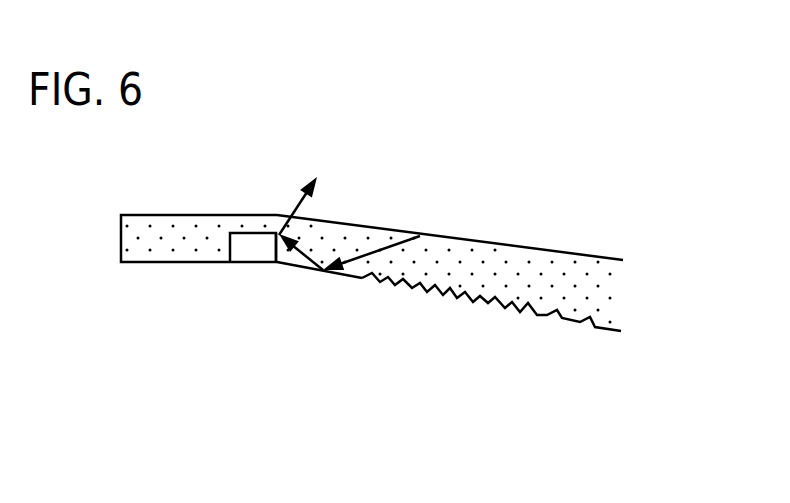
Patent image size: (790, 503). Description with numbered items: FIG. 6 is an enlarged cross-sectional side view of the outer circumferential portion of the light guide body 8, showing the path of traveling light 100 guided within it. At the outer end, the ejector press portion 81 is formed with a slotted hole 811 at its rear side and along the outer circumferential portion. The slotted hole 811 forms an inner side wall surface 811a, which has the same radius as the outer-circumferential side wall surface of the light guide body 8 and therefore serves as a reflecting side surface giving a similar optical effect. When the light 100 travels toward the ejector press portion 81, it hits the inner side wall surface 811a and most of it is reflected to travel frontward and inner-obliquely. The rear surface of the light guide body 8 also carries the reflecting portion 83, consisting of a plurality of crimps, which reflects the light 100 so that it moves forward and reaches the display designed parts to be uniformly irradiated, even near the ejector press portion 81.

The light guide body 8 is at (542, 248).
The ejector press portion 81 is at (205, 214).
The slotted hole 811 is at (242, 264).
The inner side wall surface 811a is at (272, 245).
The reflecting portion 83 is at (388, 294).
The light 100 is at (289, 212).